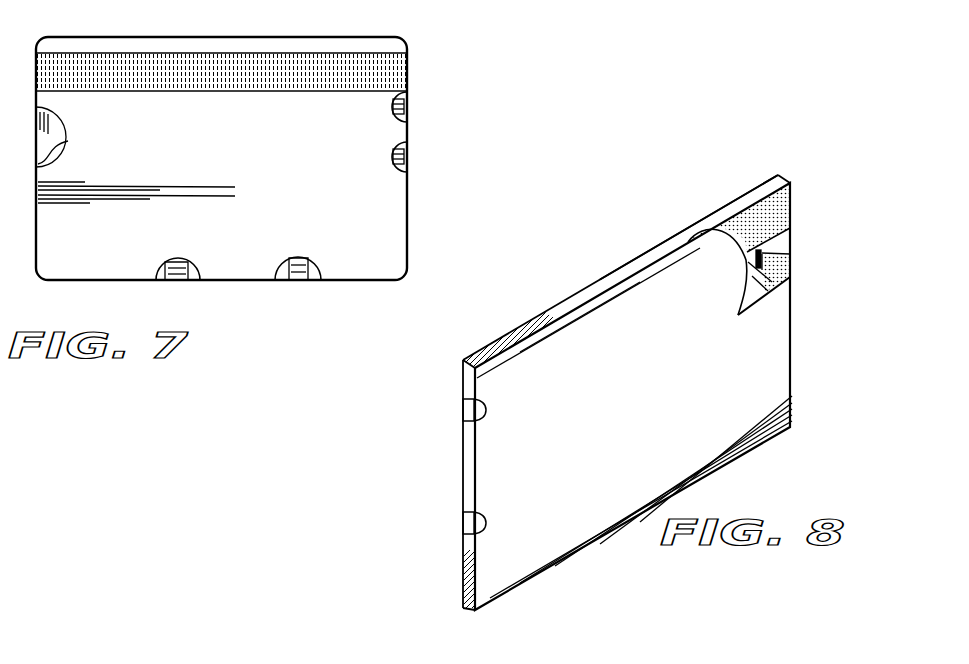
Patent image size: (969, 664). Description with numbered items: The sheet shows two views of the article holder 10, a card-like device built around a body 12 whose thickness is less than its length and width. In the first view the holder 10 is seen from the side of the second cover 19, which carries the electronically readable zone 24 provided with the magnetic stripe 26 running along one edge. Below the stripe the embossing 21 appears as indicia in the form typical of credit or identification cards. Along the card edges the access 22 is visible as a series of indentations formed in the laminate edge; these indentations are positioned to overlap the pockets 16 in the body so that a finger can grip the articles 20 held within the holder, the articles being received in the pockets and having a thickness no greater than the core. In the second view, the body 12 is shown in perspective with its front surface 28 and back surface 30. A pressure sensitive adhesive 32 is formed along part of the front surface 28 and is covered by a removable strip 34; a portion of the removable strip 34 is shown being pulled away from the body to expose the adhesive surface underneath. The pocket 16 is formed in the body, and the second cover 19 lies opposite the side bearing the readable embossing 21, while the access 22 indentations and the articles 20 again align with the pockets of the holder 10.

In FIG. 7, the article holder 10 is at (442, 177).
In FIG. 8, the body 12 is at (645, 255).
In FIG. 8, the pocket 16 is at (771, 249).
In FIG. 8, the second cover 19 is at (748, 263).
In FIG. 7, the articles 20 is at (410, 107).
In FIG. 8, the articles 20 is at (487, 412).
In FIG. 7, the embossing 21 is at (384, 229).
In FIG. 7, the access 22 is at (393, 103).
In FIG. 8, the access 22 is at (463, 425).
In FIG. 7, the electronically readable zone 24 is at (226, 64).
In FIG. 7, the magnetic stripe 26 is at (152, 65).
In FIG. 8, the front surface 28 is at (767, 218).
In FIG. 8, the back surface 30 is at (758, 189).
In FIG. 8, the pressure sensitive adhesive 32 is at (740, 223).
In FIG. 8, the removable strip 34 is at (755, 283).